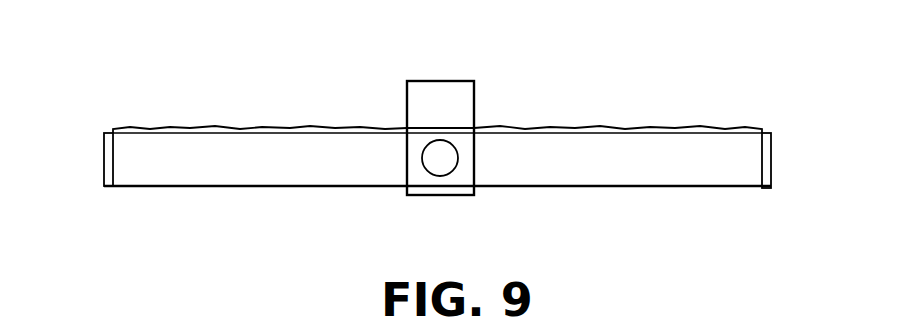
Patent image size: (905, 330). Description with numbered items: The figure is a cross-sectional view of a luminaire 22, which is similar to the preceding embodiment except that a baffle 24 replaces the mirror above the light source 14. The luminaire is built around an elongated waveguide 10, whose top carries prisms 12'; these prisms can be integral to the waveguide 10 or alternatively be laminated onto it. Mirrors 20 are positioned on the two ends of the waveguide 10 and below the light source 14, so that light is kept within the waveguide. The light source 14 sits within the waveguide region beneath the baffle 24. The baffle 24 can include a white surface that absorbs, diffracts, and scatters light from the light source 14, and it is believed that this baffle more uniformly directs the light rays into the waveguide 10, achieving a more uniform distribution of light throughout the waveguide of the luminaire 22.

The waveguide 10 is at (201, 173).
The prisms 12' is at (437, 103).
The light source 14 is at (425, 154).
The mirrors 20 is at (107, 161).
The luminaire 22 is at (636, 92).
The baffle 24 is at (452, 86).